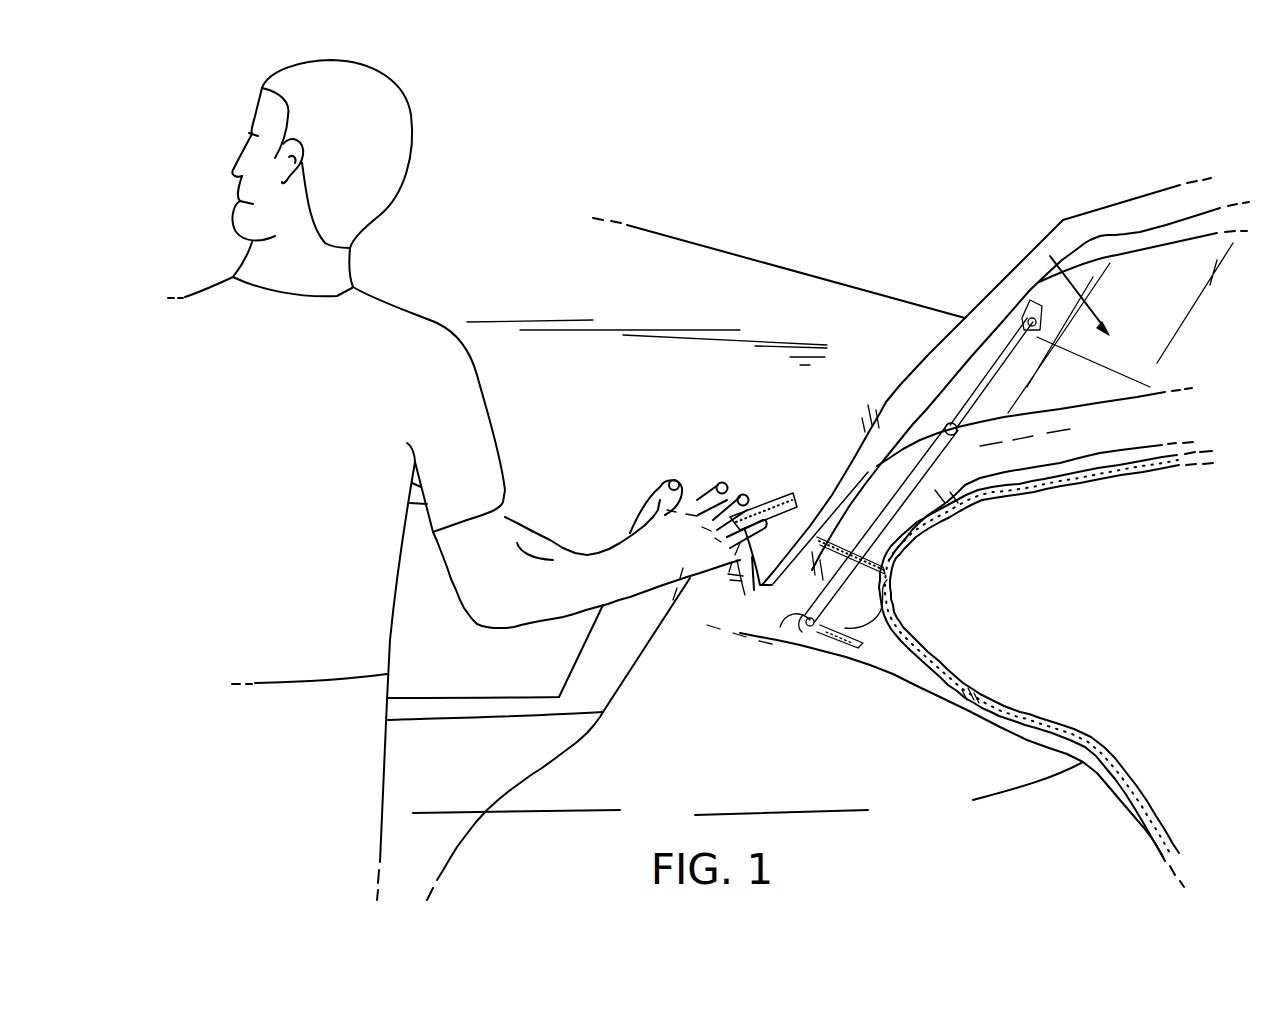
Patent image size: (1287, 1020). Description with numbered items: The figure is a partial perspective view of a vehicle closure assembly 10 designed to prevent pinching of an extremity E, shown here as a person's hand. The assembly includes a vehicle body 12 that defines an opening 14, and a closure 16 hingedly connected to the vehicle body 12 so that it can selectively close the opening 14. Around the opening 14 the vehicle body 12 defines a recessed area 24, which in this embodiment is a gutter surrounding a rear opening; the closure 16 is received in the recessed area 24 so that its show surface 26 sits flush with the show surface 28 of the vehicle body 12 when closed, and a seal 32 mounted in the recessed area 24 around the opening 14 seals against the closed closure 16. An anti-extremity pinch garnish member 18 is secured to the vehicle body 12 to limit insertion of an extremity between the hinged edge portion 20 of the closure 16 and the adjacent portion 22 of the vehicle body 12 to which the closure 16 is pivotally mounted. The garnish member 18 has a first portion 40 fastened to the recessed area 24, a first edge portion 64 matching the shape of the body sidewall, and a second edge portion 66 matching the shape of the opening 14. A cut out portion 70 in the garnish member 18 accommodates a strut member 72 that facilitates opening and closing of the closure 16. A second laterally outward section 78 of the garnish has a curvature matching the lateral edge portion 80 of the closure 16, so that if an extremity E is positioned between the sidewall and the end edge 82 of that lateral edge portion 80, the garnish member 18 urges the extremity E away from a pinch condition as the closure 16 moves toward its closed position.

The vehicle closure assembly 10 is at (915, 198).
The vehicle body 12 is at (868, 723).
The opening 14 is at (968, 632).
The closure 16 is at (1003, 280).
The garnish member 18 is at (764, 604).
The hinged edge portion 20 is at (1033, 467).
The adjacent portion 22 is at (770, 492).
The recessed area 24 is at (887, 525).
The show surface of the closure 26 is at (848, 420).
The show surface of the vehicle body 28 is at (808, 422).
The seal 32 is at (988, 507).
The first portion 40 is at (895, 602).
The first edge portion 64 is at (712, 490).
The second edge portion 66 is at (897, 595).
The cut out portion 70 is at (842, 632).
The strut member 72 is at (895, 572).
The second laterally outward section 78 is at (743, 600).
The lateral edge portion 80 is at (838, 495).
The end edge 82 is at (757, 605).
The extremity E is at (737, 588).